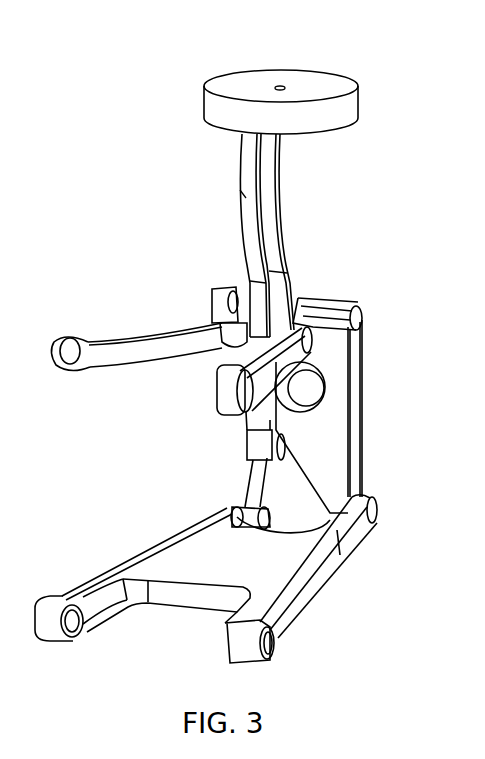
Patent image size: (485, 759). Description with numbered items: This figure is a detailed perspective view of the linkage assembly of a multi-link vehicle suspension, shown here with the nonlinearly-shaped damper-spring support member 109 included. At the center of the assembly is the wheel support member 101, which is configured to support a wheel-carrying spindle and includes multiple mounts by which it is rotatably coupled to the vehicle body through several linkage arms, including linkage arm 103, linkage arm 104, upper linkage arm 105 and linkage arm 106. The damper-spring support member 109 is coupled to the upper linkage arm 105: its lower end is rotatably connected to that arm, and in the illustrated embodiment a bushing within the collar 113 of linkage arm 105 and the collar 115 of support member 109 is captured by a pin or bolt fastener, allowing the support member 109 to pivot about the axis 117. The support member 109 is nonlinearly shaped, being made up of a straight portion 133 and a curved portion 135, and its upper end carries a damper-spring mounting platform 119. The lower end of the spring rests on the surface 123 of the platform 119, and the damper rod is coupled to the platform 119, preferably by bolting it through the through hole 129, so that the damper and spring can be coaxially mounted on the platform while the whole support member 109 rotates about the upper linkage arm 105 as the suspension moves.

The wheel support member 101 is at (328, 448).
The linkage arm 103 is at (352, 530).
The linkage arm 104 is at (250, 478).
The upper linkage arm 105 is at (210, 388).
The linkage arm 106 is at (142, 355).
The damper-spring support member 109 is at (295, 228).
The collar 113 is at (298, 298).
The collar 115 is at (222, 377).
The axis 117 is at (318, 342).
The damper-spring mounting platform 119 is at (215, 110).
The surface 123 is at (321, 84).
The through hole 129 is at (280, 84).
The straight portion 133 is at (226, 290).
The curved portion 135 is at (243, 195).